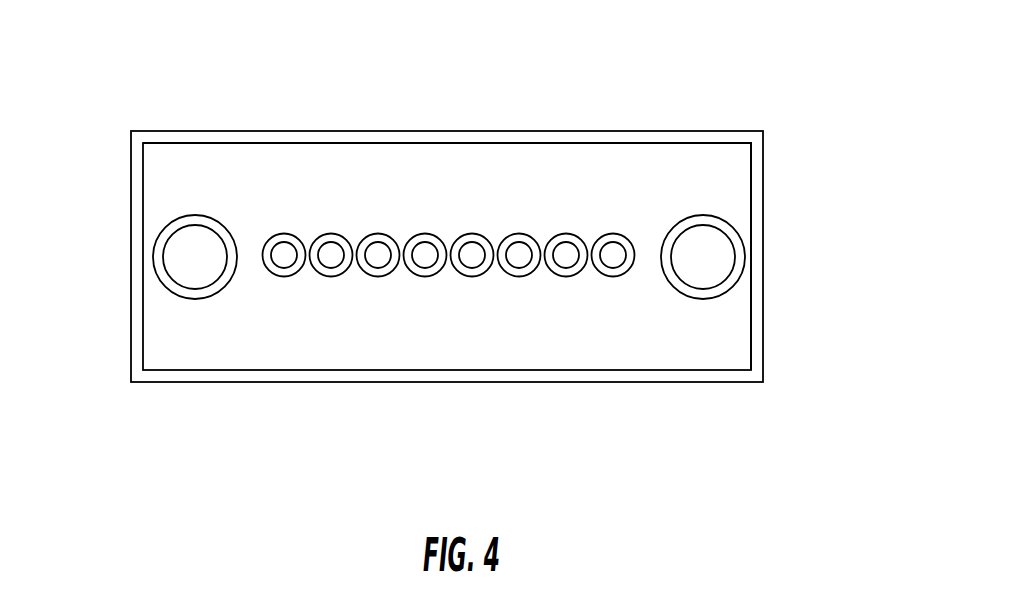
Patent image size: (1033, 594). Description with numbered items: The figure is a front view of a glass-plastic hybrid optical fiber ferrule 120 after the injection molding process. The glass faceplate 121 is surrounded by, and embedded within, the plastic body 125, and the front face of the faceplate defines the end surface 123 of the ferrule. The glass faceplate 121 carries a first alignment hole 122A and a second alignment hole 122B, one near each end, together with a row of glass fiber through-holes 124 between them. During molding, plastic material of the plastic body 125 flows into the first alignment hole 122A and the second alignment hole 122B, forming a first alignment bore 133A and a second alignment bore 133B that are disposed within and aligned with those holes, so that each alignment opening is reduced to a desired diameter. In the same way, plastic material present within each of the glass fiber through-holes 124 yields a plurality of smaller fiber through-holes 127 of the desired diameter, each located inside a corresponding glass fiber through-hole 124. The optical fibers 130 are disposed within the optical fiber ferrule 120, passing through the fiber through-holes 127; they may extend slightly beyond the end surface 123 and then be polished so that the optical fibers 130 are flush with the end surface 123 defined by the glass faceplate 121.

The optical fiber ferrule 120 is at (803, 154).
The glass faceplate 121 is at (245, 352).
The end surface 123 is at (198, 316).
The first alignment hole 122A is at (199, 243).
The second alignment hole 122B is at (722, 242).
The first alignment bore 133A is at (155, 260).
The second alignment bore 133B is at (753, 263).
The optical fibers 130 is at (285, 258).
The plastic body 125 is at (667, 285).
The fiber through-holes 127 is at (561, 244).
The glass fiber through-holes 124 is at (581, 232).